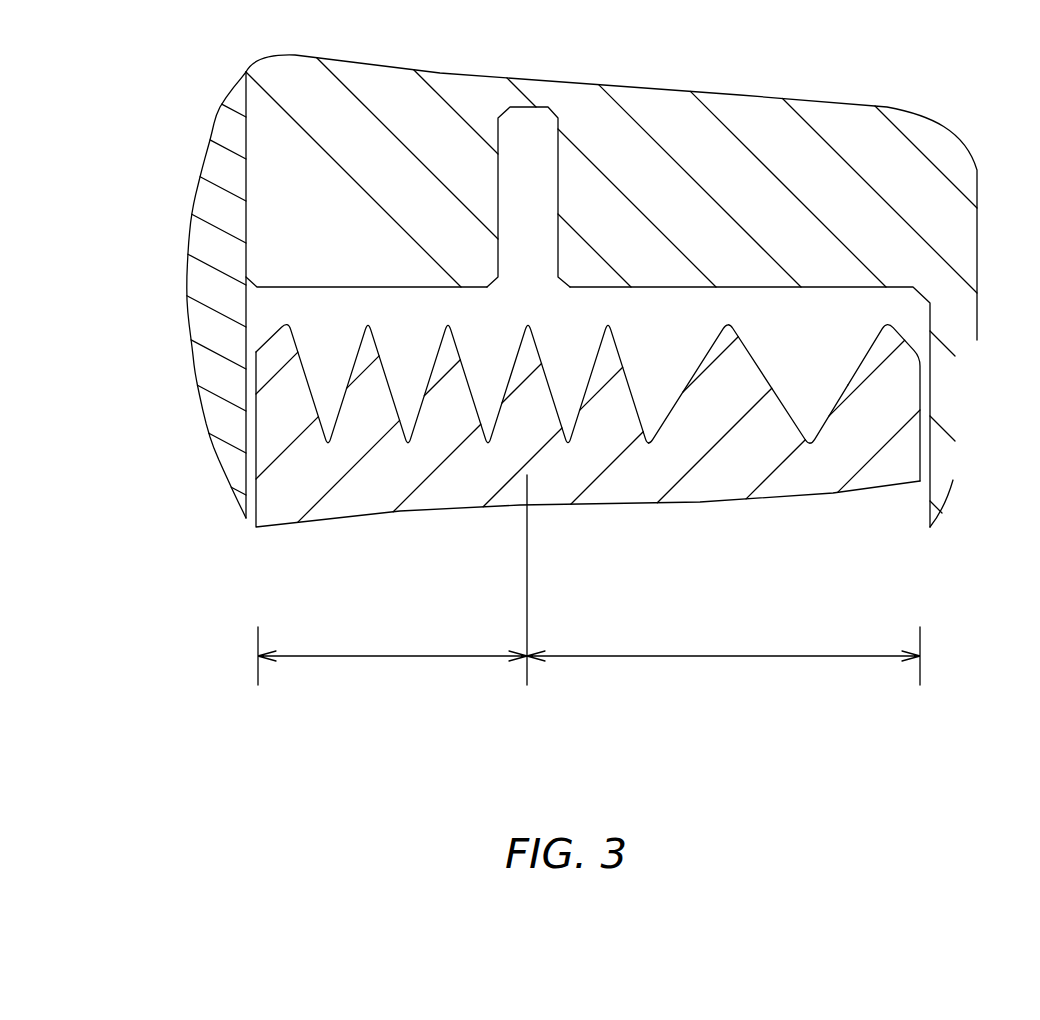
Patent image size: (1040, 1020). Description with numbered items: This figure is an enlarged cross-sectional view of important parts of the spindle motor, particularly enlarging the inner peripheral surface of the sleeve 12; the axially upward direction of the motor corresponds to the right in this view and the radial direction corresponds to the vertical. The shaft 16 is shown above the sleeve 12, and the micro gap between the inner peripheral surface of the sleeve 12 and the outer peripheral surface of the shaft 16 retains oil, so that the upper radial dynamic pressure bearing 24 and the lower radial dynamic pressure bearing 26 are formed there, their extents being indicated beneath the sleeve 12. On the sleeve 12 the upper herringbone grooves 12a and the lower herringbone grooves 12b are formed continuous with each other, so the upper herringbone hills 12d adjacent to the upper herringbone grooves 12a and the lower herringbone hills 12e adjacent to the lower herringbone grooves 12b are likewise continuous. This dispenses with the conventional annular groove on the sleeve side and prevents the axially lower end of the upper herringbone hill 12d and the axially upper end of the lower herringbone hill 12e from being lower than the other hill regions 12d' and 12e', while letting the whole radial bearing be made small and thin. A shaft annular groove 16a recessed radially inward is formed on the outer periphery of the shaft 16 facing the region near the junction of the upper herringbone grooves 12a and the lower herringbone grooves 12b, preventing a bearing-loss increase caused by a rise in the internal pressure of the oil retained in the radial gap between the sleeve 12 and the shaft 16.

The shaft 16 is at (377, 173).
The shaft annular groove 16a is at (528, 173).
The sleeve 12 is at (558, 475).
The region of lower herringbone hill 12e' is at (233, 468).
The lower herringbone grooves 12b is at (332, 399).
The lower herringbone hills 12e is at (432, 468).
The upper herringbone hills 12d is at (728, 468).
The upper herringbone grooves 12a is at (813, 415).
The region of upper herringbone hill 12d' is at (898, 468).
The lower radial dynamic pressure bearing 26 is at (392, 580).
The upper radial dynamic pressure bearing 24 is at (723, 646).